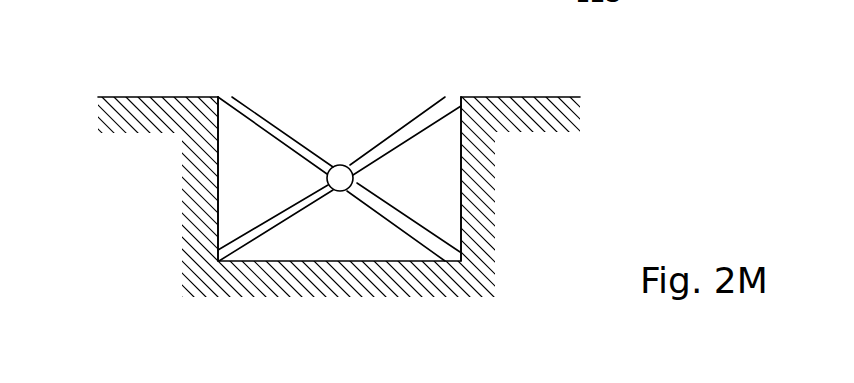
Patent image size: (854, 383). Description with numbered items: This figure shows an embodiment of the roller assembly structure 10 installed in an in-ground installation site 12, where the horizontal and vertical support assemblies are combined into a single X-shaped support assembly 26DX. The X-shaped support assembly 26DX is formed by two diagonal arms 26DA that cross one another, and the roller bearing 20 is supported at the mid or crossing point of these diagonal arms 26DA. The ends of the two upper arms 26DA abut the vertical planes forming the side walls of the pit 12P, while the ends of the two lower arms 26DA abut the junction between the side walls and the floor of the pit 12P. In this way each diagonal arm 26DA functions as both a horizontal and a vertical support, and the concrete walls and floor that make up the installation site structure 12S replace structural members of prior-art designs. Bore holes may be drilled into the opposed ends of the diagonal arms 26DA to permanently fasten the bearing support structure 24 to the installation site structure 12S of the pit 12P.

The roller assembly structure 10 is at (385, 183).
The installation site 12 is at (385, 156).
The pit 12P is at (340, 135).
The installation site structure 12S is at (409, 179).
The roller bearing 20 is at (282, 261).
The bearing support structure 24 is at (275, 111).
The diagonal arms 26DA is at (264, 200).
The X-shaped support assembly 26DX is at (185, 256).